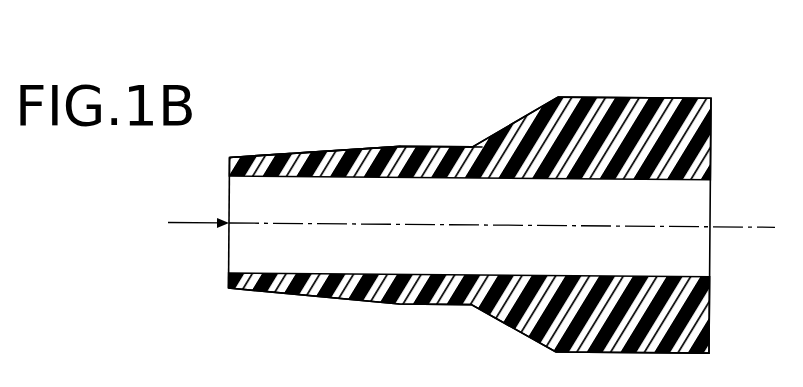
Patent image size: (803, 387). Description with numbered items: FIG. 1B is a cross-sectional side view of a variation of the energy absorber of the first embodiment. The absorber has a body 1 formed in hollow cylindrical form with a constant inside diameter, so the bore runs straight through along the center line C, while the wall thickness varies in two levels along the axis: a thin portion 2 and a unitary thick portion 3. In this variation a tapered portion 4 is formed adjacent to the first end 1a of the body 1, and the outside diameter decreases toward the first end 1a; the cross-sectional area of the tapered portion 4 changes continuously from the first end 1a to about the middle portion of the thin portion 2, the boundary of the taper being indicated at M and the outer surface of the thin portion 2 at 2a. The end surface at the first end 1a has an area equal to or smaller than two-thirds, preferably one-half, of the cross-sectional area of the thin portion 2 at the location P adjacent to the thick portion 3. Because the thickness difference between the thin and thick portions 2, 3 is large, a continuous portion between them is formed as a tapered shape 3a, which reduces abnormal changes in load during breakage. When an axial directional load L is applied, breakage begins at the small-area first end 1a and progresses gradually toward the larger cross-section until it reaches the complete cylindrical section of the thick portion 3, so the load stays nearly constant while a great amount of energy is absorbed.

The body 1 is at (525, 84).
The first end 1a is at (229, 279).
The thin portion 2 is at (403, 140).
The outer peripheral surface of tip portion 2a is at (368, 147).
The thick portion 3 is at (621, 93).
The tapered shape 3a is at (515, 123).
The tapered portion 4 is at (278, 152).
The boundary mark M is at (347, 147).
The location adjacent to the thick portion P is at (467, 147).
The central axis C is at (433, 213).
The axial directional load L is at (184, 221).